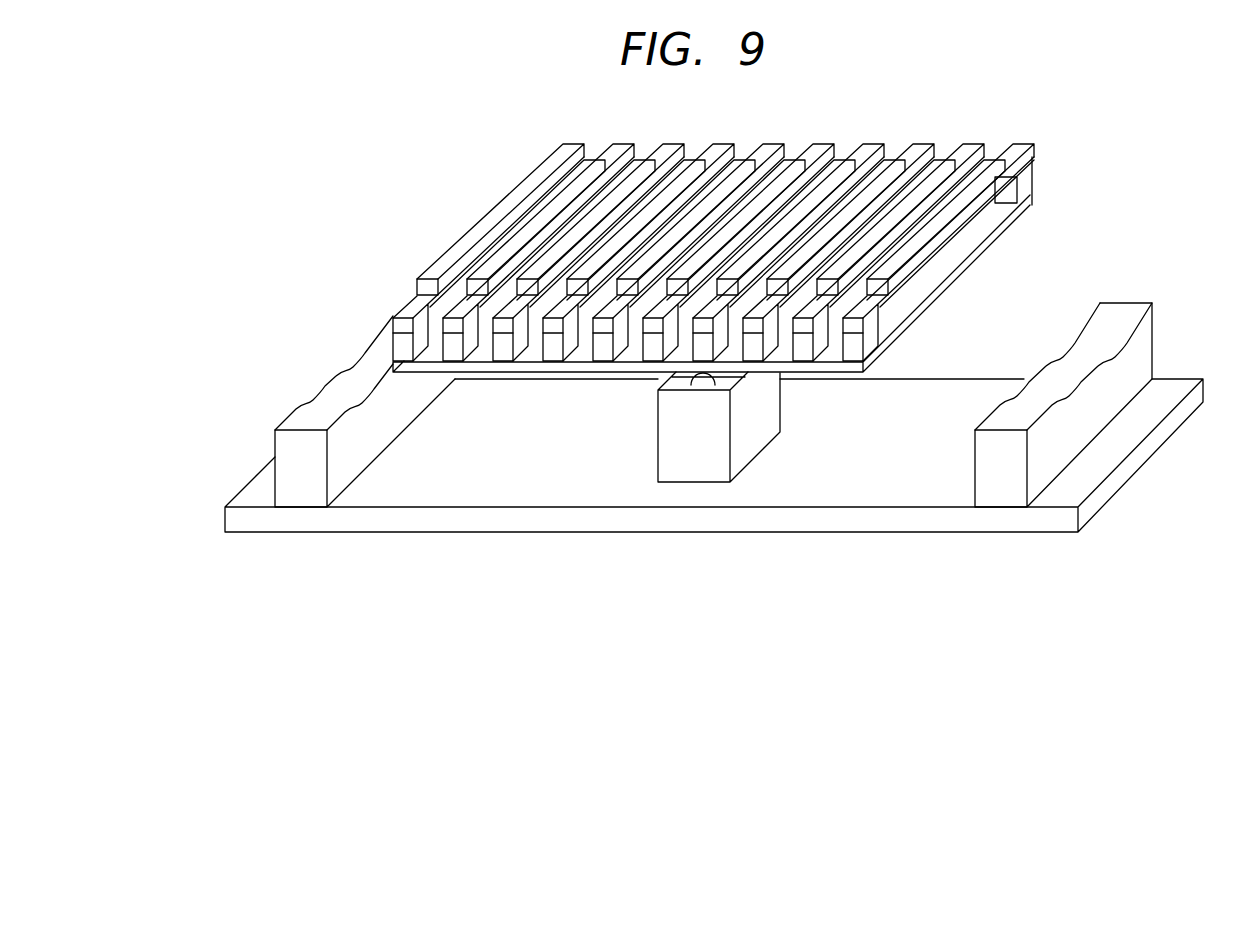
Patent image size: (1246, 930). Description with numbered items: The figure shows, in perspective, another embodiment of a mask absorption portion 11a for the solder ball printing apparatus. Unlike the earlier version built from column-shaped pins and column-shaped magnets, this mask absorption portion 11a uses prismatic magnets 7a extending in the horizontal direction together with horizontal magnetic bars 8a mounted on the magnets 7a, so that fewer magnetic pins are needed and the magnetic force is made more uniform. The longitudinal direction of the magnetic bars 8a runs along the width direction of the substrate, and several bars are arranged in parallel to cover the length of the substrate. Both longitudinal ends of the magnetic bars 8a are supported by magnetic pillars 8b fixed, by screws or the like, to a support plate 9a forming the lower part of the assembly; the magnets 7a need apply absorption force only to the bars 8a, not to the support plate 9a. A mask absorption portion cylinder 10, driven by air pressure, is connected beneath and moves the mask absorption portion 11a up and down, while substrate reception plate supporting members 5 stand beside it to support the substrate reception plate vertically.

The substrate reception plate supporting member 5 is at (1062, 443).
The prismatic magnet 7a is at (426, 286).
The magnetic bar 8a is at (447, 327).
The magnetic pillar 8b is at (503, 348).
The support plate 9a is at (400, 368).
The mask absorption portion cylinder 10 is at (697, 452).
The mask absorption portion 11a is at (191, 228).